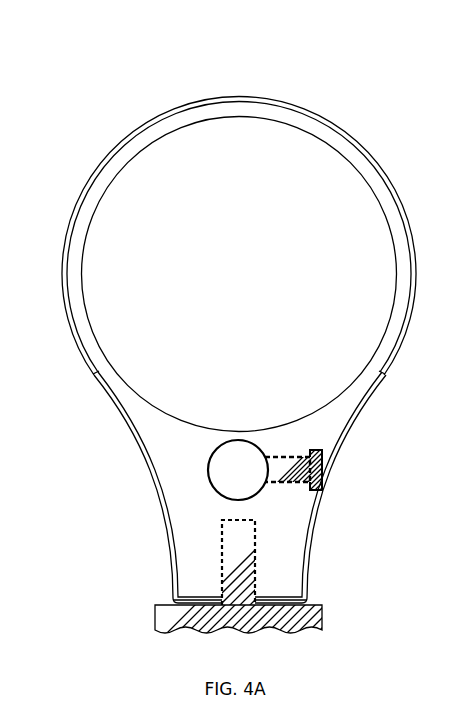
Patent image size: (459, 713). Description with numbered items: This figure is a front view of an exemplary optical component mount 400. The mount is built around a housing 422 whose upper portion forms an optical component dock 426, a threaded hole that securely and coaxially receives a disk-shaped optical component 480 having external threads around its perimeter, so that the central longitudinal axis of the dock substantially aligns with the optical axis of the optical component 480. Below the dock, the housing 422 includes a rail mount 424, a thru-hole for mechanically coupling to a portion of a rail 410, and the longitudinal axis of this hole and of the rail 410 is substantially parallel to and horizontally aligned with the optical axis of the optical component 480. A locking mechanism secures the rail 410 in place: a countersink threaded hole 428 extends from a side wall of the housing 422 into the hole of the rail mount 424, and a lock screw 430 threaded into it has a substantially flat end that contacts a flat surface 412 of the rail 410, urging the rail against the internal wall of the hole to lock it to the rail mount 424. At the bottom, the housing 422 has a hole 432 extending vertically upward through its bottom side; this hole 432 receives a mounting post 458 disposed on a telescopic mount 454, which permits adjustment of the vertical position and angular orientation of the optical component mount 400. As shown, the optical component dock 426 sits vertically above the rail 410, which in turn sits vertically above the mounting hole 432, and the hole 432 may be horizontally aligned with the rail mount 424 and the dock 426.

The optical component mount 400 is at (137, 92).
The housing 422 is at (290, 100).
The optical component dock 426 is at (90, 215).
The optical component 480 is at (222, 306).
The rail 410 is at (232, 470).
The rail mount 424 is at (213, 486).
The lock screw 430 is at (313, 467).
The countersink threaded hole 428 is at (322, 445).
The flat surface 412 is at (320, 488).
The hole 432 is at (240, 565).
The mounting post 458 is at (240, 565).
The telescopic mount 454 is at (277, 620).